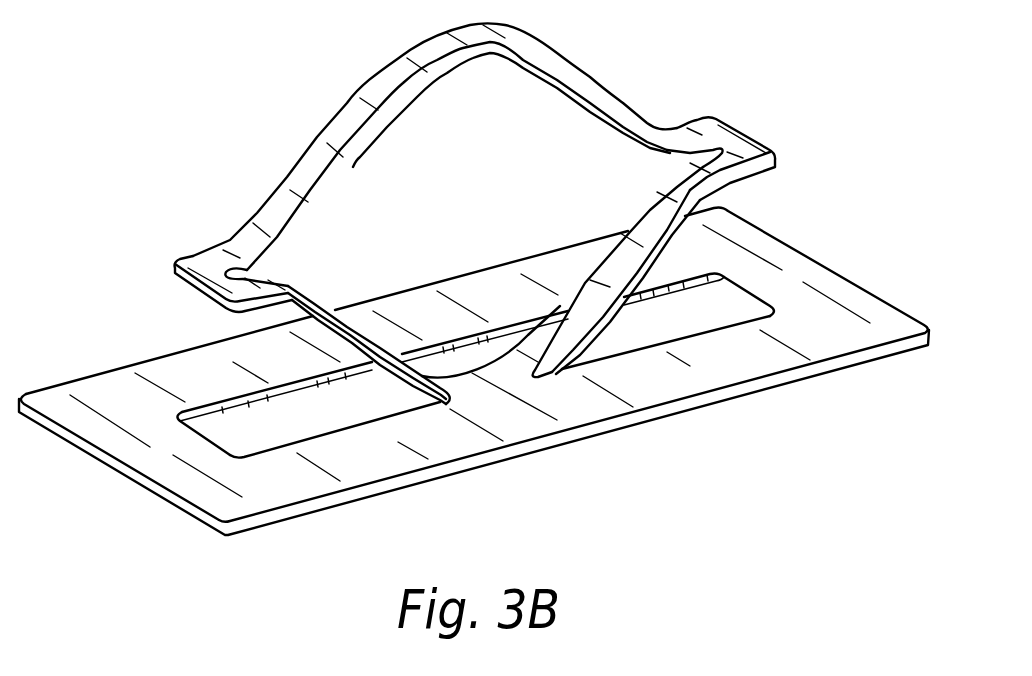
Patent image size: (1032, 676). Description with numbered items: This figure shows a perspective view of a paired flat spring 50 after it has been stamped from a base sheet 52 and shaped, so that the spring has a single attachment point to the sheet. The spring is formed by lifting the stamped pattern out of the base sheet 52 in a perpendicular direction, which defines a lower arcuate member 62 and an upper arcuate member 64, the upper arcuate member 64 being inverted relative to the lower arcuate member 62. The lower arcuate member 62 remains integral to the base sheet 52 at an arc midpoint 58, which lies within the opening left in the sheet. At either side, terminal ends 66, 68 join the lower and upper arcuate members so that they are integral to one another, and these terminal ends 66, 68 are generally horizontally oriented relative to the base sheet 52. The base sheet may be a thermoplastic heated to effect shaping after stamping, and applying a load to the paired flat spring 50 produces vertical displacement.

The paired flat spring 50 is at (186, 168).
The base sheet 52 is at (818, 260).
The arc midpoint 58 is at (486, 390).
The lower arcuate member 62 is at (653, 210).
The upper arcuate member 64 is at (360, 172).
The terminal end 66 is at (750, 138).
The terminal end 68 is at (197, 258).